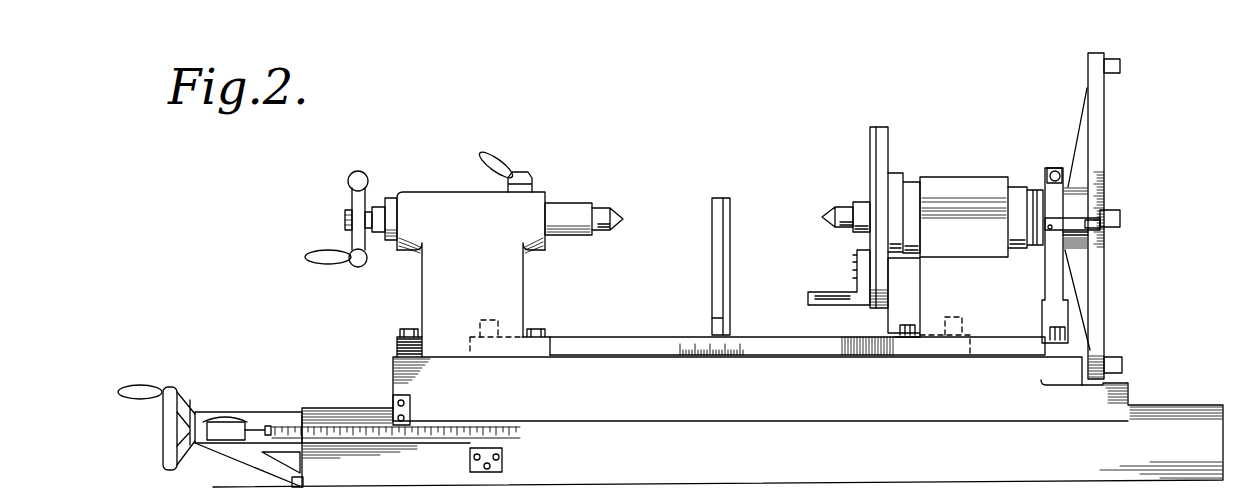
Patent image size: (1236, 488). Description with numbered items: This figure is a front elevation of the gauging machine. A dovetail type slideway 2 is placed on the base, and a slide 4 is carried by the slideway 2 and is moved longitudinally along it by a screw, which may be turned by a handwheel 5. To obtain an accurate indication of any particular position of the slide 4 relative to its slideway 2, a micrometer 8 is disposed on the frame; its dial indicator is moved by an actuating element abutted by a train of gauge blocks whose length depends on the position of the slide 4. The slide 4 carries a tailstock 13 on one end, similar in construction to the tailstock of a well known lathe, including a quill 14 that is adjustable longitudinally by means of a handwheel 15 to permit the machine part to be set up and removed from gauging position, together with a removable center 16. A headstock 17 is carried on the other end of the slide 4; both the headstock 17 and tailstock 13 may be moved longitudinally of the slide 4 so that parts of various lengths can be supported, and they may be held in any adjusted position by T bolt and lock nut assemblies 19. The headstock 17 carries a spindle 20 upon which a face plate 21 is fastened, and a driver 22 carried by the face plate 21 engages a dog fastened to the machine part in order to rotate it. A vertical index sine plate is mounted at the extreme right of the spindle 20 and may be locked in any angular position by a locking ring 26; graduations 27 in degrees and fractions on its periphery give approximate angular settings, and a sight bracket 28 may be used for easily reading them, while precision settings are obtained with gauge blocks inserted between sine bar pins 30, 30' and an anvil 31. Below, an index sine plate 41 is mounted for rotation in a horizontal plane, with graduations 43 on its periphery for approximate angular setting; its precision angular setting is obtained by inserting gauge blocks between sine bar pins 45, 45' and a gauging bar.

The slideway 2 is at (805, 454).
The slide 4 is at (393, 383).
The handwheel 5 is at (172, 387).
The micrometer 8 is at (225, 432).
The tailstock 13 is at (473, 252).
The quill 14 is at (589, 203).
The handwheel 15 is at (350, 190).
The removable center 16 is at (620, 226).
The headstock 17 is at (968, 195).
The T bolt and lock nut assemblies 19 is at (908, 345).
The spindle 20 is at (862, 202).
The face plate 21 is at (878, 126).
The driver 22 is at (832, 292).
The locking ring 26 is at (1045, 172).
The graduations 27 is at (1105, 236).
The sight bracket 28 is at (1075, 232).
The sine bar pins 30 is at (1117, 216).
The knob 30' is at (1128, 201).
The anvil 31 is at (1125, 383).
The index sine plate 41 is at (630, 336).
The graduations 43 is at (702, 357).
The sine bar pin 45 is at (479, 312).
The dashed stop 45' is at (953, 318).